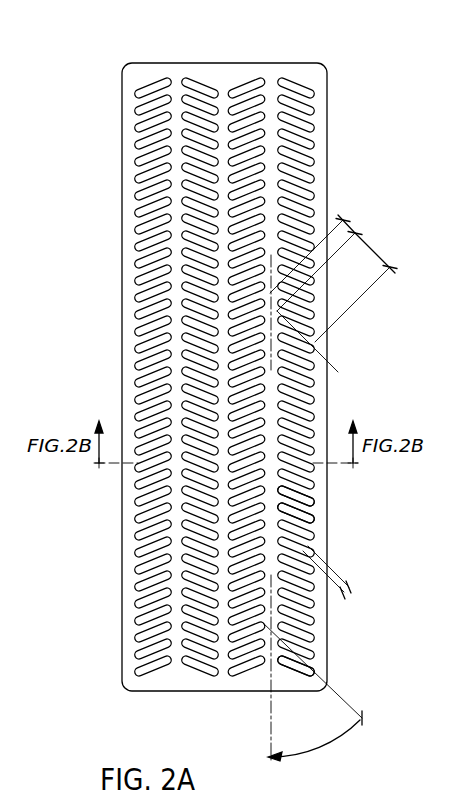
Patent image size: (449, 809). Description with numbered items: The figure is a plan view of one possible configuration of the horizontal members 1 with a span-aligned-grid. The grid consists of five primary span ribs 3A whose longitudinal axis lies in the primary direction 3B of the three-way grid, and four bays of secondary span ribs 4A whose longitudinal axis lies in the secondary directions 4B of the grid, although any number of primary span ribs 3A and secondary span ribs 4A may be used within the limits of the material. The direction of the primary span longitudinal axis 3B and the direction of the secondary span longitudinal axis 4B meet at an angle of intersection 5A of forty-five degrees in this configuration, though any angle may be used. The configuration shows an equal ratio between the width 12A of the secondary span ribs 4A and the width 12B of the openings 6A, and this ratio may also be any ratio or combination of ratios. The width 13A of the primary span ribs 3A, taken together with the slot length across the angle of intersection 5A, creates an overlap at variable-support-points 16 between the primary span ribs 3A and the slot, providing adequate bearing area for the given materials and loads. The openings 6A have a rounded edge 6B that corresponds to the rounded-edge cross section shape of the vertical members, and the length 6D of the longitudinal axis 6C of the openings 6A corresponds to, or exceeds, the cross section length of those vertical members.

The horizontal members 1 is at (223, 63).
The variable-support-points 16 is at (271, 314).
The width of the primary span ribs 13A is at (350, 226).
The length of the longitudinal axis of the openings 6D is at (372, 250).
The longitudinal axis of the openings 6C is at (336, 370).
The openings 6A is at (289, 504).
The rounded edge 6B is at (311, 527).
The width of the secondary span ribs 12A is at (349, 590).
The width of the openings 12B is at (344, 596).
The secondary span ribs 4A is at (303, 660).
The secondary span longitudinal axis 4B is at (328, 688).
The primary span ribs 3A is at (268, 672).
The primary span longitudinal axis 3B is at (270, 705).
The angle of intersection 5A is at (312, 750).